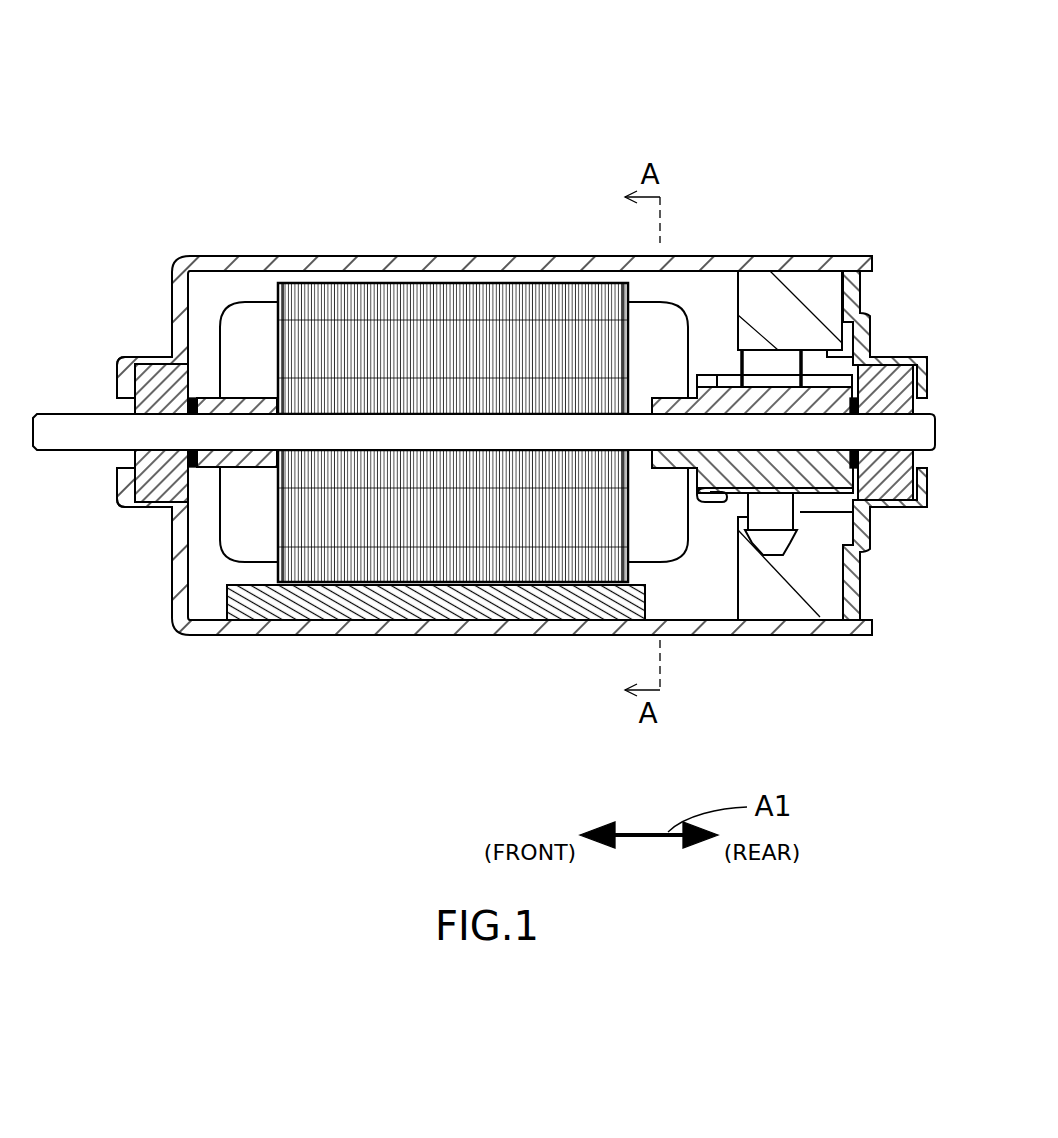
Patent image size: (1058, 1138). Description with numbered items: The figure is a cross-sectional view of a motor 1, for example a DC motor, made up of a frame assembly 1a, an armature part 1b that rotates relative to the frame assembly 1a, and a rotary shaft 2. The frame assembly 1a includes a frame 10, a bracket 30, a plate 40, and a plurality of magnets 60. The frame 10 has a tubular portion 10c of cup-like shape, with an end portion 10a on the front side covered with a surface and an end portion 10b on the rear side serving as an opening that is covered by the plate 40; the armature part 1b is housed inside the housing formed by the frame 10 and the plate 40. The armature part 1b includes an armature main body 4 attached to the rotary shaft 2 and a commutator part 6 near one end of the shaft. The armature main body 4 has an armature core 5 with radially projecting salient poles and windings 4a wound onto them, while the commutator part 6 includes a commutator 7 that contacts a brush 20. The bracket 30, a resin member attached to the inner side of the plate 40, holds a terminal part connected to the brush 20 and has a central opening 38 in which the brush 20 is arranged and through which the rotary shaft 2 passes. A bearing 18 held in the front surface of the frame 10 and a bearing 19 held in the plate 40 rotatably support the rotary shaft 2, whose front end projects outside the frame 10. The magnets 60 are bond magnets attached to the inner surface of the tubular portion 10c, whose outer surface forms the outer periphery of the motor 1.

The motor 1 is at (85, 26).
The frame assembly 1a is at (285, 235).
The armature part 1b is at (226, 270).
The rotary shaft 2 is at (67, 436).
The armature main body 4 is at (192, 340).
The windings 4a is at (238, 520).
The armature core 5 is at (300, 327).
The commutator part 6 is at (717, 540).
The commutator 7 is at (740, 387).
The frame 10 is at (213, 630).
The end portion on the front side 10a is at (180, 610).
The end portion on the rear side 10b is at (874, 633).
The tubular portion 10c is at (455, 637).
The bearing 18 is at (147, 377).
The bearing 19 is at (907, 366).
The brush 20 is at (777, 507).
The bracket 30 is at (722, 288).
The opening 38 is at (855, 476).
The plate 40 is at (882, 288).
The magnets 60 is at (204, 595).